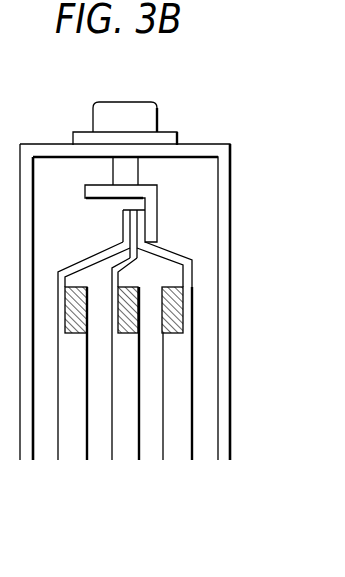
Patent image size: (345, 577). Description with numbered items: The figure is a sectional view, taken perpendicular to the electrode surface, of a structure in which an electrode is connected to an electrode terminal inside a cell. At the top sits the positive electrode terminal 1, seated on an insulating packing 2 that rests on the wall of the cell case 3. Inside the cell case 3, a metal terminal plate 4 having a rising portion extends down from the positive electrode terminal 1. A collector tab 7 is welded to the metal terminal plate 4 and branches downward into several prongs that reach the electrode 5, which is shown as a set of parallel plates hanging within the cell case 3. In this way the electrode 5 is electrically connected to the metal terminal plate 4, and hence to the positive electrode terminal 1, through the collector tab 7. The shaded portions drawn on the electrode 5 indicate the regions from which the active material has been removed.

The positive electrode terminal 1 is at (136, 108).
The insulating packing 2 is at (168, 132).
The cell case 3 is at (230, 198).
The metal terminal plate 4 is at (91, 191).
The electrode 5 is at (76, 450).
The collector tab 7 is at (192, 258).